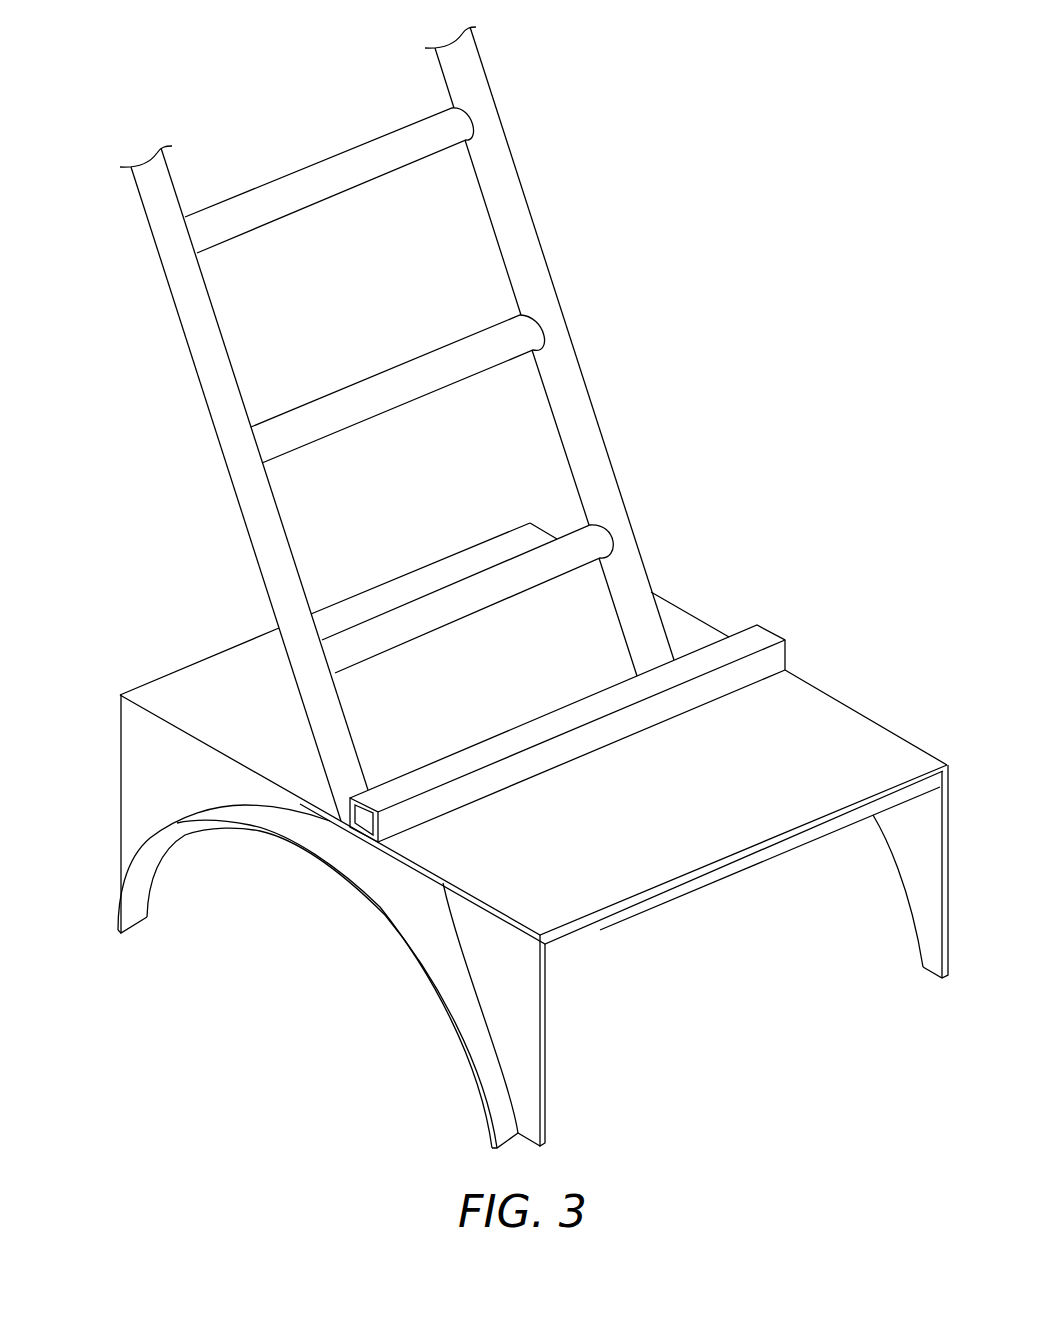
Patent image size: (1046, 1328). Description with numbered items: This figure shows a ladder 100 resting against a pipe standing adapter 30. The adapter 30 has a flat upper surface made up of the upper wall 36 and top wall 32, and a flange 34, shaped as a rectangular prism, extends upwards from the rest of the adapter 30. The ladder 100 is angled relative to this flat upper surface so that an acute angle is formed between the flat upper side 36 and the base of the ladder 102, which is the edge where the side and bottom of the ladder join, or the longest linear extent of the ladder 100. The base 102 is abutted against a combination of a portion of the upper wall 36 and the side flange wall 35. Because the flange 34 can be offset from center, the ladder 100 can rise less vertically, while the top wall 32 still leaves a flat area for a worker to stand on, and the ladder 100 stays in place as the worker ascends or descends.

The adapter 30 is at (498, 835).
The top wall 32 is at (847, 728).
The flange 34 is at (538, 716).
The side flange wall 35 is at (758, 668).
The upper wall 36 is at (668, 620).
The ladder 100 is at (567, 380).
The base of the ladder 102 is at (340, 808).